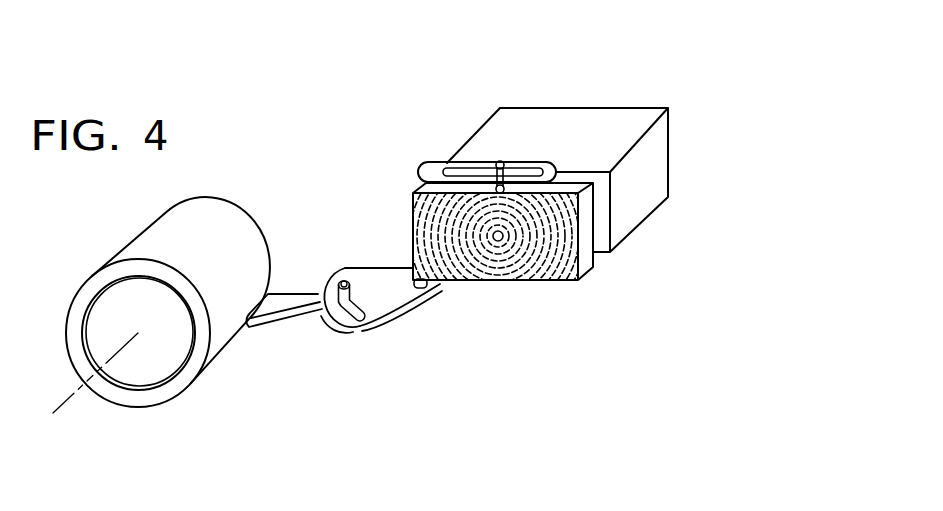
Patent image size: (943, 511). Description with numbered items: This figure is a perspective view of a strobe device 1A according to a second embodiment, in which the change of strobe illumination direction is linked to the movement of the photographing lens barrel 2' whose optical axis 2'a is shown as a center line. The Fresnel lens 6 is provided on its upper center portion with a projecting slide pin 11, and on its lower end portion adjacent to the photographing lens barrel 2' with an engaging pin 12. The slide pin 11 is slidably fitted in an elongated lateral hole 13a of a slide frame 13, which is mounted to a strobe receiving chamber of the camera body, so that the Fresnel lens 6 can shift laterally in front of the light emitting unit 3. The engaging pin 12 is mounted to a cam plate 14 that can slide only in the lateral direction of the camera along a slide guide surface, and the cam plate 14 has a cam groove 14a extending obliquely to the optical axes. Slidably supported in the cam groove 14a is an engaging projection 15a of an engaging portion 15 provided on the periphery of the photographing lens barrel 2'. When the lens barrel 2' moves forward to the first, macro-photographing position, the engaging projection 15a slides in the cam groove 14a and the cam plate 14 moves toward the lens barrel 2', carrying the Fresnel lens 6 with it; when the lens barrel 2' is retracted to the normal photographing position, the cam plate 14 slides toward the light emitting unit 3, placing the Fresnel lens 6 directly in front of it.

The drive unit 1A is at (661, 86).
The photographing lens barrel 2' is at (174, 283).
The roller axis 2'a is at (95, 398).
The light emitting unit 3 is at (543, 120).
The Fresnel lens 6 is at (578, 277).
The slide pin 11 is at (504, 163).
The engaging pin 12 is at (428, 274).
The slide frame 13 is at (546, 164).
The elongated lateral hole 13a is at (463, 170).
The cam plate 14 is at (377, 282).
The cam groove 14a is at (363, 333).
The engaging portion 15 is at (290, 310).
The engaging projection 15a is at (342, 278).